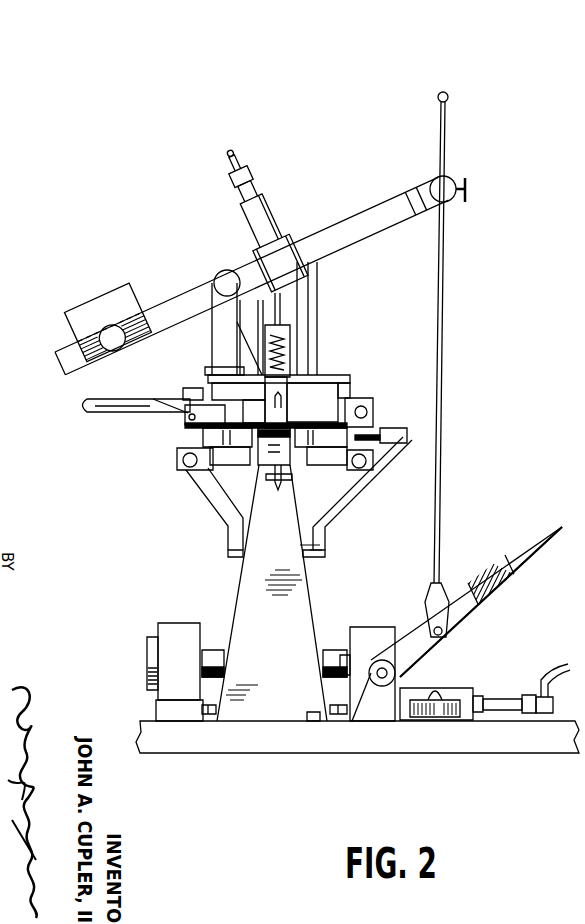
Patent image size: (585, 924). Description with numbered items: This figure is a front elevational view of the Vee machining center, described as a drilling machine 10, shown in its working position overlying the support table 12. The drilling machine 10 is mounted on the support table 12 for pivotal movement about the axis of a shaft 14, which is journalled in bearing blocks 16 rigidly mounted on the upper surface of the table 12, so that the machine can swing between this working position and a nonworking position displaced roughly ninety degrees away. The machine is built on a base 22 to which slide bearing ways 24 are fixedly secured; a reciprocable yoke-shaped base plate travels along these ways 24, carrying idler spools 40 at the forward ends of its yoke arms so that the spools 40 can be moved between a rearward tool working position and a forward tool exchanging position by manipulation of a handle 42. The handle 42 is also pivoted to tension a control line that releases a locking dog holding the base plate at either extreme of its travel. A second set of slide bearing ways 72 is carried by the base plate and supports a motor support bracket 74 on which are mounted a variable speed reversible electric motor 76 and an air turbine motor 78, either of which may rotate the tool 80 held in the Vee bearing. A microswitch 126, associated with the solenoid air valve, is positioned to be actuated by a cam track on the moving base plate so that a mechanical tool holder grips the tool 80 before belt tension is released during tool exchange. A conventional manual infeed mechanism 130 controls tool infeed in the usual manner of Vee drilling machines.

The drilling machine 10 is at (116, 540).
The support table 12 is at (148, 720).
The shaft 14 is at (214, 658).
The bearing blocks 16 is at (174, 636).
The base 22 is at (256, 562).
The slide bearing ways 24 is at (364, 478).
The idler spools 40 is at (298, 484).
The handle 42 is at (112, 404).
The slide bearing ways 72 is at (366, 404).
The motor support bracket 74 is at (322, 372).
The variable speed reversible electric motor 76 is at (268, 230).
The air turbine motor 78 is at (296, 290).
The tool 80 is at (264, 475).
The microswitch 126 is at (389, 430).
The manual infeed mechanism 130 is at (486, 600).